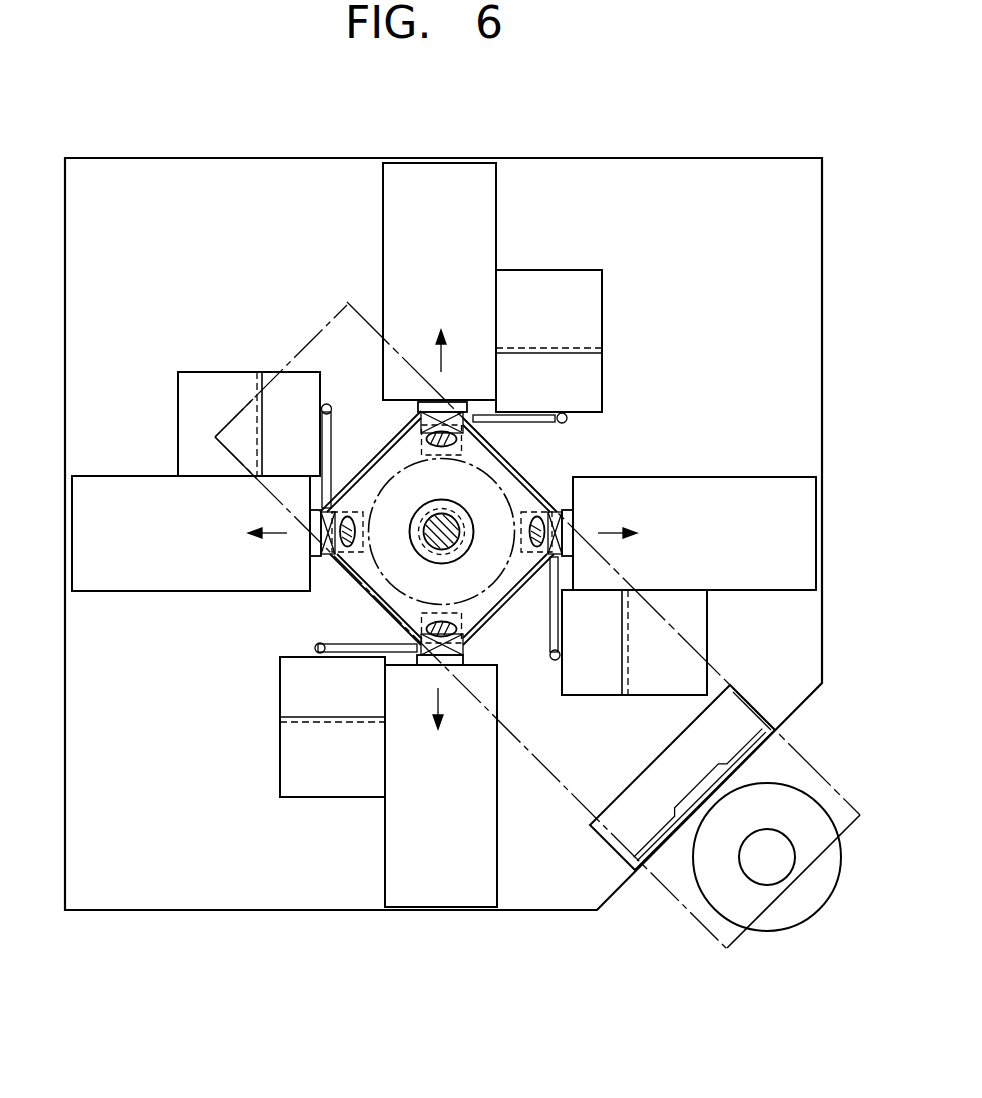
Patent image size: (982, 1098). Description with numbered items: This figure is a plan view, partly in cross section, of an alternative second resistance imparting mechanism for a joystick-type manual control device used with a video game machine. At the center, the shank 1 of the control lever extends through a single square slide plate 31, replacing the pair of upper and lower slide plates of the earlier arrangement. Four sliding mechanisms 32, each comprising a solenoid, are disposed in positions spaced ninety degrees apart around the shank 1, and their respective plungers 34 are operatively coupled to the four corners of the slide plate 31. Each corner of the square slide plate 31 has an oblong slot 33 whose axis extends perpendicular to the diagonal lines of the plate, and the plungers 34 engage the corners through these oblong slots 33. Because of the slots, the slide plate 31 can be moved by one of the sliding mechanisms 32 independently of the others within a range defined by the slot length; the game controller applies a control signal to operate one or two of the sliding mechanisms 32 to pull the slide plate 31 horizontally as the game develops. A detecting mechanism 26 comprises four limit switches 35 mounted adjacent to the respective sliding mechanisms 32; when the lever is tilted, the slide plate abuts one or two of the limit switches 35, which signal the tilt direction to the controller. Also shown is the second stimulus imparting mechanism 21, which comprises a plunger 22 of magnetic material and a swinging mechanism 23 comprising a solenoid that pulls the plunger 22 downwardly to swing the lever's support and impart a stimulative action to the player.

The shank 1 is at (428, 543).
The second stimulus imparting mechanism 21 is at (800, 781).
The plunger 22 is at (767, 870).
The swinging mechanism 23 is at (817, 912).
The detecting mechanism 26 is at (617, 314).
The square slide plate 31 is at (497, 466).
The sliding mechanisms 32 is at (383, 215).
The oblong slots 33 is at (421, 437).
The plungers 34 is at (424, 385).
The limit switches 35 is at (288, 380).